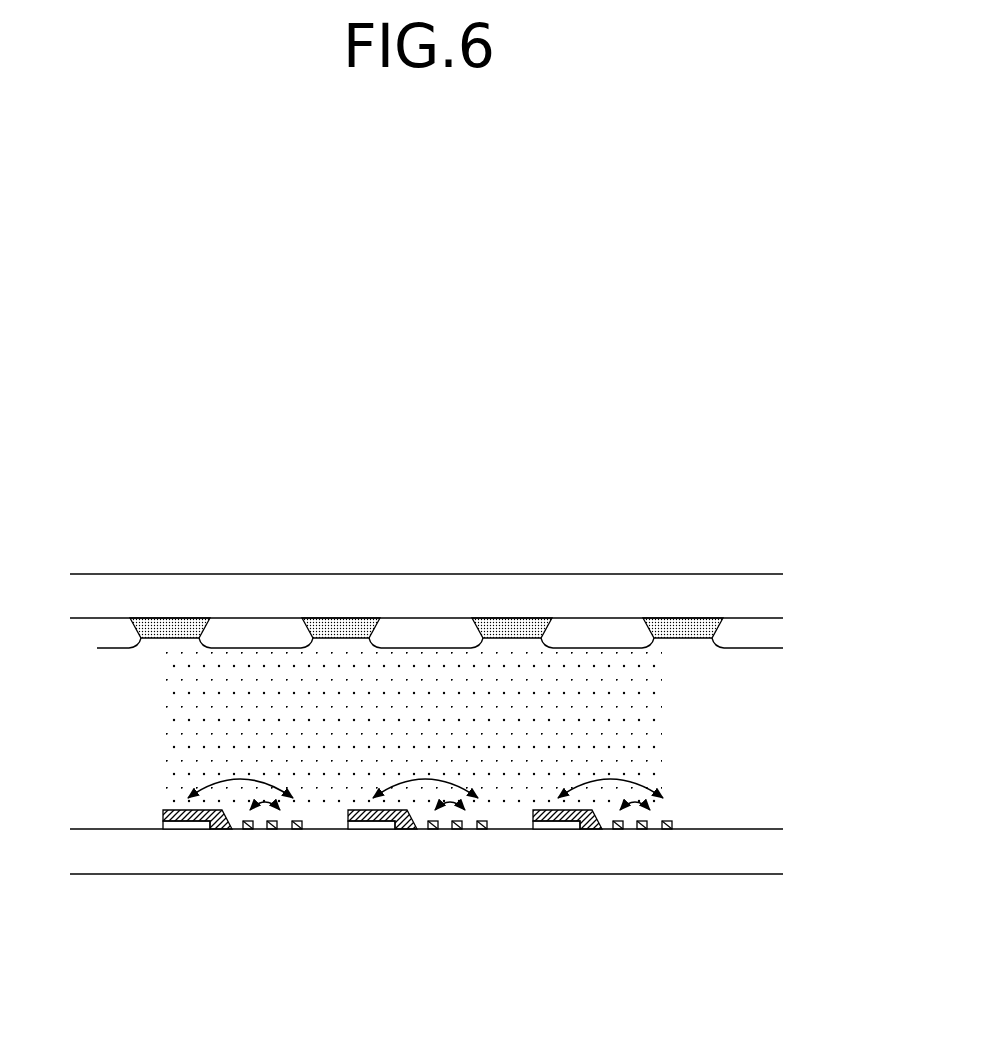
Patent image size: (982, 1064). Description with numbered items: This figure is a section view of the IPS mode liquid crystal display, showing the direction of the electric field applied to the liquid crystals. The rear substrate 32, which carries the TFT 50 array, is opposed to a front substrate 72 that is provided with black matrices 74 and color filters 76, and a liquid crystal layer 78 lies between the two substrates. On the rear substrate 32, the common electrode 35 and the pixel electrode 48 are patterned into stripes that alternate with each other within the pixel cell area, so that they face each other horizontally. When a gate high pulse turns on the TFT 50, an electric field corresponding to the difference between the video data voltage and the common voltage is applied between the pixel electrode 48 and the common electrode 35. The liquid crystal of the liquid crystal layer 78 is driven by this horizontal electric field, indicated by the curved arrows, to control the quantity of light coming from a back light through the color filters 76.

The rear substrate 32 is at (403, 866).
The common electrode 35 is at (248, 829).
The pixel electrode 48 is at (228, 829).
The TFT 50 is at (177, 829).
The front substrate 72 is at (620, 578).
The black matrices 74 is at (520, 620).
The color filters 76 is at (413, 627).
The liquid crystal layer 78 is at (770, 741).